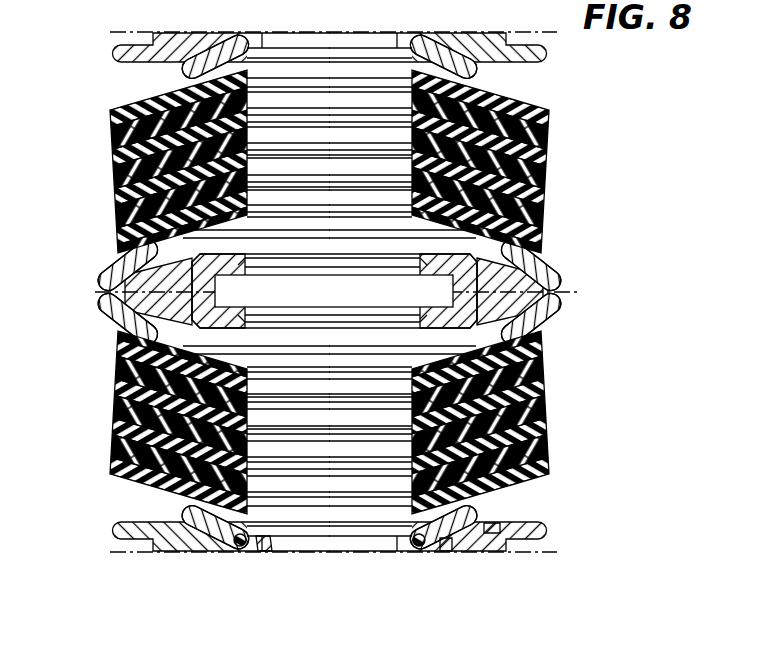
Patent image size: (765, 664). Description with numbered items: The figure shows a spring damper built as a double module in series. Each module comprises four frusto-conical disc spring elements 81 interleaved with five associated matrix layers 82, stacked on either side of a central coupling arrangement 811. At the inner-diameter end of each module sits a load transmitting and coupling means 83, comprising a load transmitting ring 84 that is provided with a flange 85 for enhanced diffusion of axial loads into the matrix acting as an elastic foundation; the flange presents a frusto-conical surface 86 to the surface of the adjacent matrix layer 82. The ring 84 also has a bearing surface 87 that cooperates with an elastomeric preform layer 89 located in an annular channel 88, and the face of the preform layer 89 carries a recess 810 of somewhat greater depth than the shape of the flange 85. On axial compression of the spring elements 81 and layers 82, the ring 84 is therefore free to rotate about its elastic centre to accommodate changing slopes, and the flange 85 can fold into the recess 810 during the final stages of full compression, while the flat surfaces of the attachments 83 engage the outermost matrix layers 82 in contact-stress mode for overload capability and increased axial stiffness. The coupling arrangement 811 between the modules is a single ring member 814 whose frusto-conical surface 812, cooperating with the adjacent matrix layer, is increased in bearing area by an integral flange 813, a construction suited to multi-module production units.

The frusto-conical disc spring element 81 is at (110, 134).
The matrix layer 82 is at (104, 212).
The load transmitting and coupling means 83 is at (292, 329).
The load transmitting ring 84 is at (270, 555).
The flange 85 is at (200, 547).
The frusto-conical surface 86 is at (167, 497).
The bearing surface 87 is at (240, 543).
The annular channel 88 is at (415, 548).
The elastomeric preform layer 89 is at (447, 550).
The recess 810 is at (492, 525).
The coupling arrangement 811 is at (592, 292).
The frusto-conical surface 812 is at (442, 221).
The integral flange 813 is at (197, 229).
The single ring member 814 is at (100, 296).